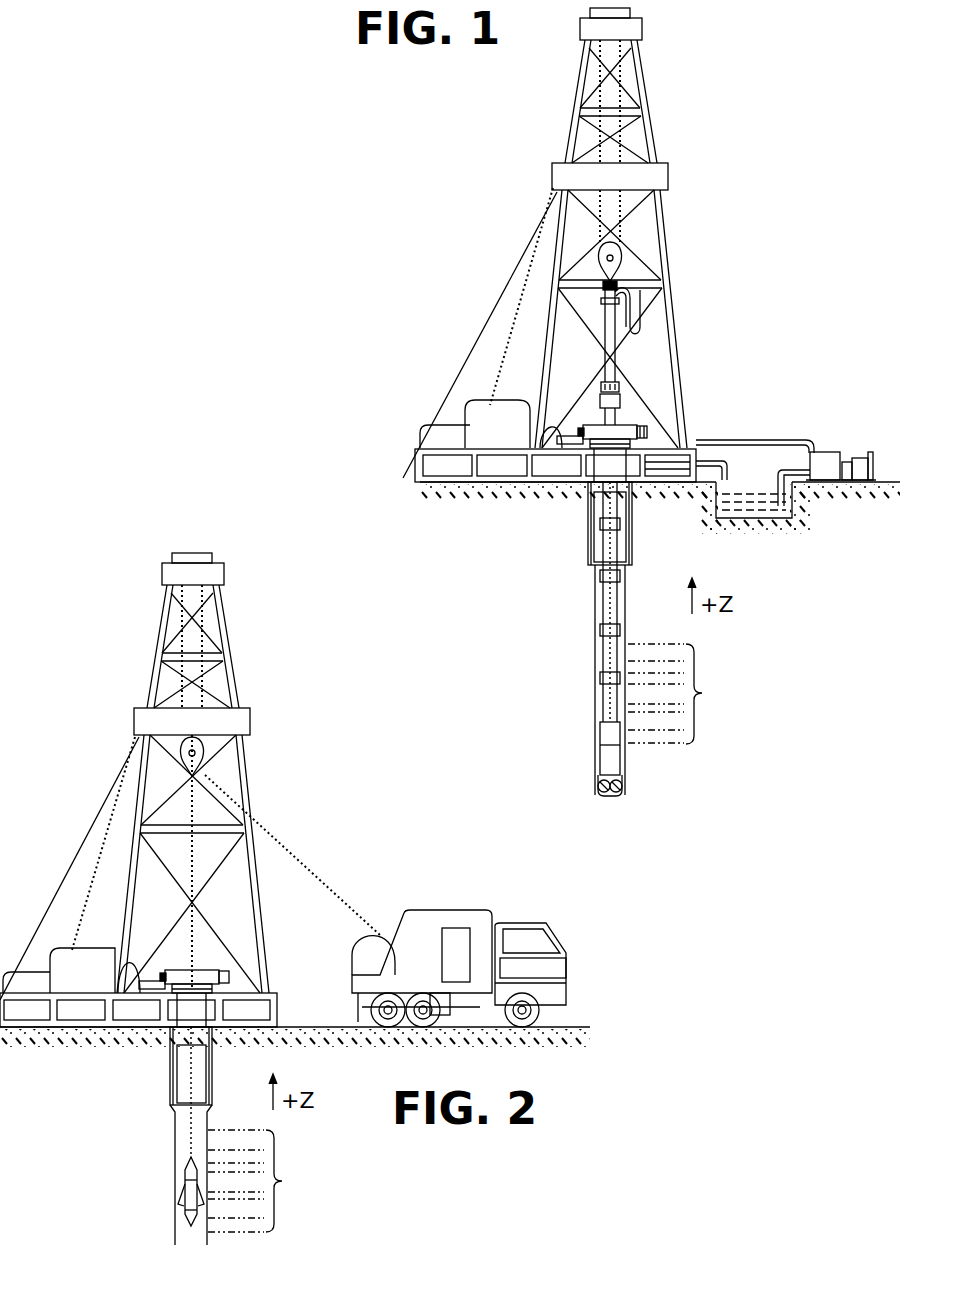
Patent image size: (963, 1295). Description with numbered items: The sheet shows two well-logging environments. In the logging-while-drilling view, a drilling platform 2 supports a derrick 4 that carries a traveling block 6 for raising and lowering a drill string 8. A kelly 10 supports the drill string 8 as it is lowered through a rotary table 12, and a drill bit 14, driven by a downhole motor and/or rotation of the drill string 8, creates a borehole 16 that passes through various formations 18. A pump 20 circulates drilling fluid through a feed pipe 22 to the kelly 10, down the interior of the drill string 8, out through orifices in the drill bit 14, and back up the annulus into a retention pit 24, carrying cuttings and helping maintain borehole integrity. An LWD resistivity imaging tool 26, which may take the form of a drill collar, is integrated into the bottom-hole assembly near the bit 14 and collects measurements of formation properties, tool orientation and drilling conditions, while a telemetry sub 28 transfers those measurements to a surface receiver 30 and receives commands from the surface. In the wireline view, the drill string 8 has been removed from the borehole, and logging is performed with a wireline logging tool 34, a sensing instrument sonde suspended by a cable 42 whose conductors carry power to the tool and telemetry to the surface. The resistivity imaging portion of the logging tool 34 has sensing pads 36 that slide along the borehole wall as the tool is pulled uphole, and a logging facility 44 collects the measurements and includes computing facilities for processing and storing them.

In FIG. 1, the drilling platform 2 is at (414, 455).
In FIG. 2, the drilling platform 2 is at (277, 1006).
In FIG. 1, the derrick 4 is at (651, 134).
In FIG. 2, the derrick 4 is at (263, 961).
In FIG. 1, the traveling block 6 is at (621, 256).
In FIG. 2, the traveling block 6 is at (205, 752).
In FIG. 1, the drill string 8 is at (615, 608).
In FIG. 1, the kelly 10 is at (611, 322).
In FIG. 1, the rotary table 12 is at (630, 424).
In FIG. 2, the rotary table 12 is at (211, 968).
In FIG. 1, the drill bit 14 is at (619, 788).
In FIG. 1, the borehole 16 is at (624, 614).
In FIG. 1, the formations 18 is at (682, 694).
In FIG. 2, the formations 18 is at (262, 1181).
In FIG. 1, the pump 20 is at (822, 458).
In FIG. 1, the feed pipe 22 is at (764, 439).
In FIG. 1, the retention pit 24 is at (728, 517).
In FIG. 1, the LWD resistivity imaging tool 26 is at (602, 754).
In FIG. 1, the telemetry sub 28 is at (602, 737).
In FIG. 1, the surface receiver 30 is at (617, 386).
In FIG. 2, the wireline logging tool 34 is at (188, 1182).
In FIG. 2, the sensing pads 36 is at (178, 1203).
In FIG. 2, the cable 42 is at (265, 829).
In FIG. 2, the logging facility 44 is at (420, 909).